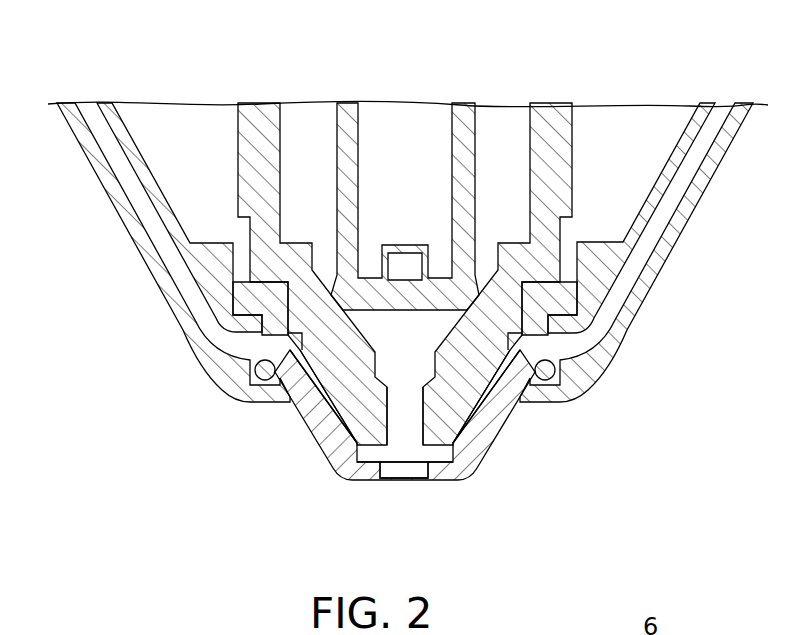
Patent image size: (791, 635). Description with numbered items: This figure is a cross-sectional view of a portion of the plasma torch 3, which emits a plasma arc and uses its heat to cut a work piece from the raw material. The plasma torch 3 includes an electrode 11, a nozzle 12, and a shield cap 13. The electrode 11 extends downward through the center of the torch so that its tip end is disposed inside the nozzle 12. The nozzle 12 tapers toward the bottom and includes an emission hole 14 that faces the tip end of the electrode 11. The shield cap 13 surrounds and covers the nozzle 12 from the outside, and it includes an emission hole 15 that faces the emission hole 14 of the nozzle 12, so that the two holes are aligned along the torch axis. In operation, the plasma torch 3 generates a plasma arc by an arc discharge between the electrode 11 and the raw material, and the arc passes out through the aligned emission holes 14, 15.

The plasma torch 3 is at (622, 422).
The electrode 11 is at (475, 173).
The nozzle 12 is at (353, 402).
The shield cap 13 is at (503, 437).
The emission hole 14 is at (413, 437).
The emission hole 15 is at (389, 466).